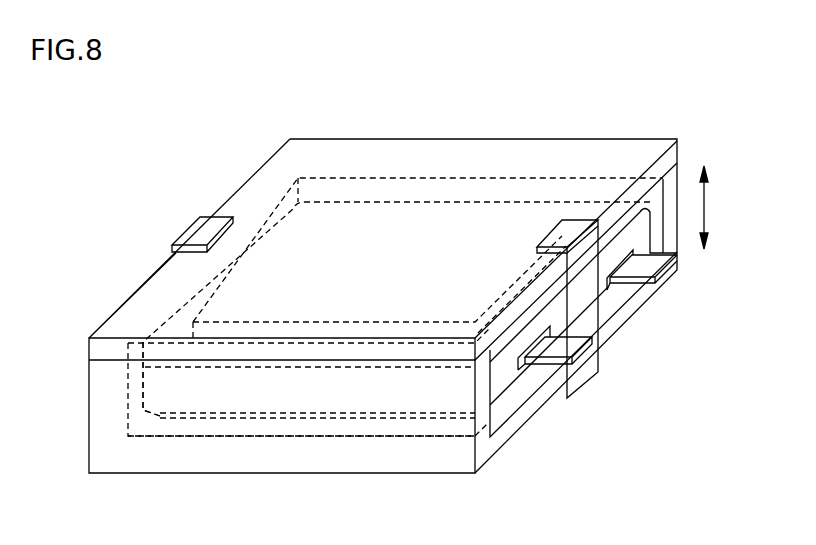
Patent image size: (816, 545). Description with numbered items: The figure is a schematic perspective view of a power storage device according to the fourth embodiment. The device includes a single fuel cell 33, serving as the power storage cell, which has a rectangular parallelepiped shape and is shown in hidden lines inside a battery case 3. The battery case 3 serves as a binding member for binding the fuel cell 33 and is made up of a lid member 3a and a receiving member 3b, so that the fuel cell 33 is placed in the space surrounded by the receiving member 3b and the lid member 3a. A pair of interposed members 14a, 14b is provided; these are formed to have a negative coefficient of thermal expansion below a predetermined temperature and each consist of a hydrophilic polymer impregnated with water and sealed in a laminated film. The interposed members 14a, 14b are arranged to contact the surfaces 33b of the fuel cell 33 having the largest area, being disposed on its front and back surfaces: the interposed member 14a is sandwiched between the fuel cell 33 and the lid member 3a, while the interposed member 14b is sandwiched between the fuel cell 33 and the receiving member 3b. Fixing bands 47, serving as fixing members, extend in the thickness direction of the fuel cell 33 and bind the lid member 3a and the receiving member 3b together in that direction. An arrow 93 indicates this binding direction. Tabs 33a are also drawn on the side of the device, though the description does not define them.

The battery case 3 is at (44, 338).
The lid member 3a is at (100, 350).
The receiving member 3b is at (100, 387).
The interposed member 14a is at (222, 318).
The interposed member 14b is at (296, 418).
The fuel cell 33 is at (187, 403).
The electrode tab 33a is at (650, 268).
The surface of fuel cell having the largest area 33b is at (172, 365).
The fixing band 47 is at (190, 236).
The arrow 93 is at (708, 207).